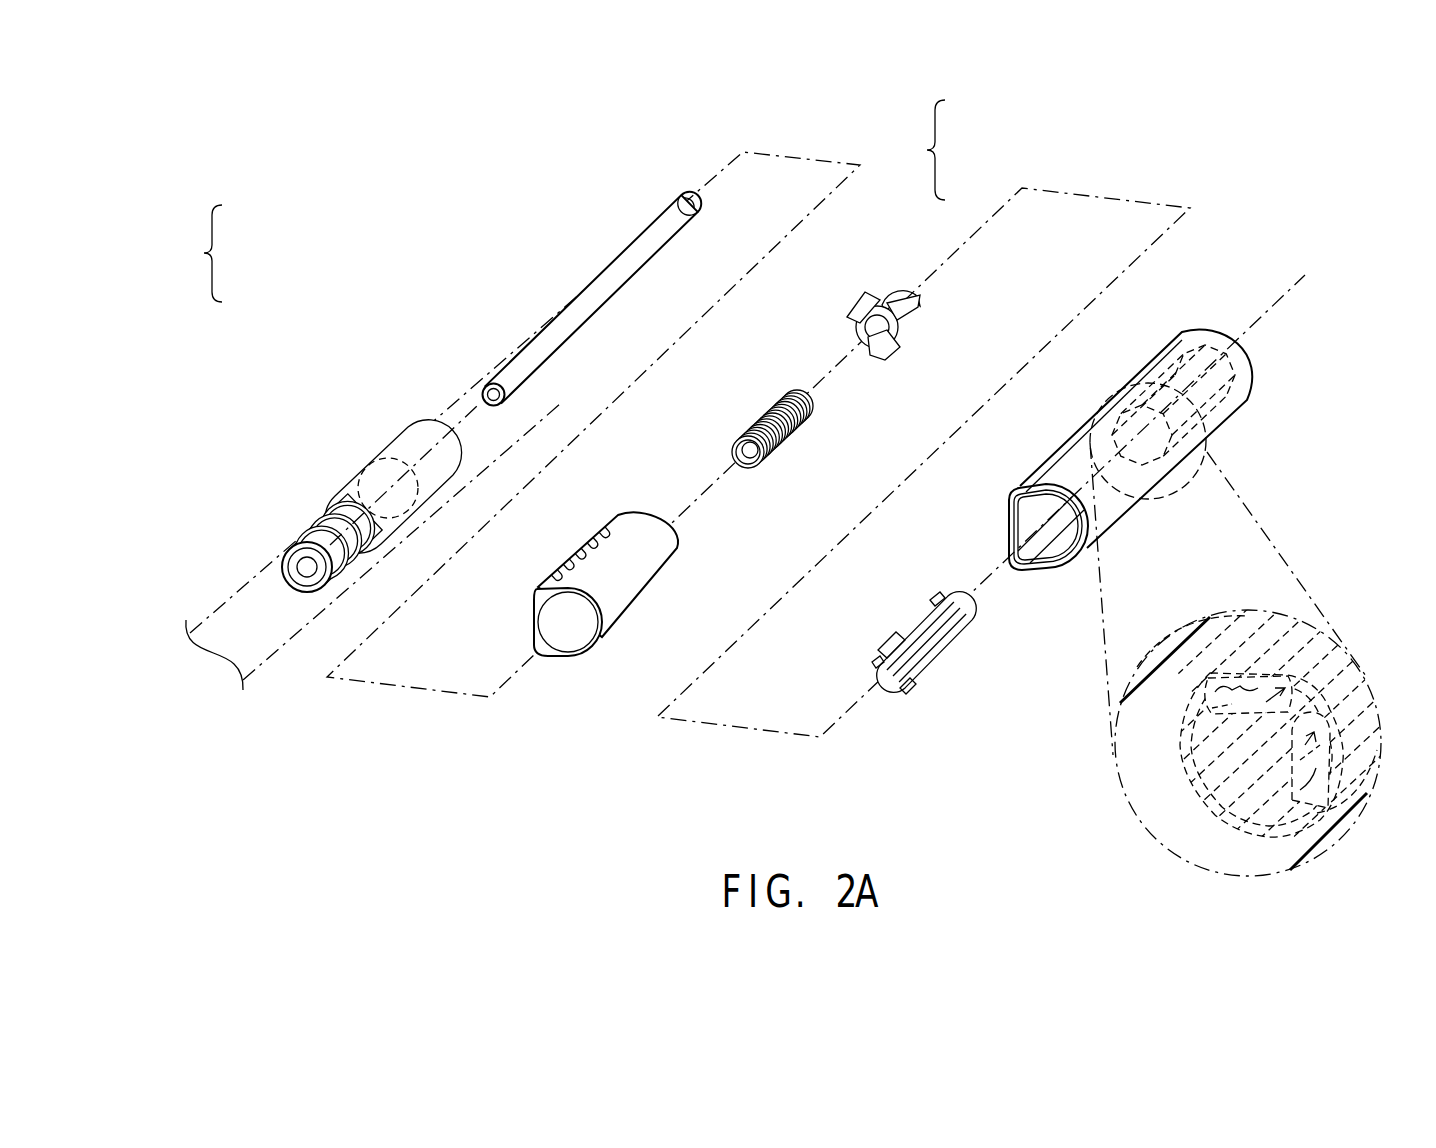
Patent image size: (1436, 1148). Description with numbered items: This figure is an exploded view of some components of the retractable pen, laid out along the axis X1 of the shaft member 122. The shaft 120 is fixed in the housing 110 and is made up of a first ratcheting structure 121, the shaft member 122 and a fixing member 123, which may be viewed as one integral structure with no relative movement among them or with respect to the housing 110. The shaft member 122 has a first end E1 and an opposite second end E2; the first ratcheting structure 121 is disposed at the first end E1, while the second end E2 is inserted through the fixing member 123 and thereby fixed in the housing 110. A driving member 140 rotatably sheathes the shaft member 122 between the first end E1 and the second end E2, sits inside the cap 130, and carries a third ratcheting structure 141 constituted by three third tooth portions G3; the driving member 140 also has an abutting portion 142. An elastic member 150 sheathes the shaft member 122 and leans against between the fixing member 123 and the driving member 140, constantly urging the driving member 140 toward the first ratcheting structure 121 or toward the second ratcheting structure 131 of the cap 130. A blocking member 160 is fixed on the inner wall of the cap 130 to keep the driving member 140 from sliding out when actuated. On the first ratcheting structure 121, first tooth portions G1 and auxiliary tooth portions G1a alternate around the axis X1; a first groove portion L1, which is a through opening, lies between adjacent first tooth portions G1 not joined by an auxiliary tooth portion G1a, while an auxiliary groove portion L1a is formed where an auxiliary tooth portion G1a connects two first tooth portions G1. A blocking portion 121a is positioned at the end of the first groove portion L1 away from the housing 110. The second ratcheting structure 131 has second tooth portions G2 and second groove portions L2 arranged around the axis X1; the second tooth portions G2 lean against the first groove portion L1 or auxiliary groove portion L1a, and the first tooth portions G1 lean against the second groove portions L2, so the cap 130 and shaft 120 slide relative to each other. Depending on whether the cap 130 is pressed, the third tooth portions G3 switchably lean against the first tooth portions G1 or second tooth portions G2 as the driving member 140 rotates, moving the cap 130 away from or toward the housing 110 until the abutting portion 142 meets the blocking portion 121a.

The housing 110 is at (247, 577).
The shaft 120 is at (207, 256).
The first ratcheting structure 121 is at (901, 667).
The blocking portion 121a is at (933, 600).
The shaft member 122 is at (571, 285).
The fixing member 123 is at (383, 446).
The cap 130 is at (1136, 449).
The second ratcheting structure 131 is at (1212, 420).
The driving member 140 is at (855, 300).
The third ratcheting structure 141 is at (927, 152).
The abutting portion 142 is at (906, 290).
The elastic member 150 is at (795, 448).
The blocking member 160 is at (650, 607).
The first end E1 is at (689, 193).
The second end E2 is at (477, 385).
The first tooth portion G1 is at (870, 668).
The auxiliary tooth portion G1a is at (910, 682).
The second tooth portion G2 is at (1310, 808).
The third tooth portion G3 is at (878, 292).
The first groove portion L1 is at (905, 630).
The auxiliary groove portion L1a is at (940, 640).
The second groove portion L2 is at (1202, 725).
The axis X1 is at (1288, 290).